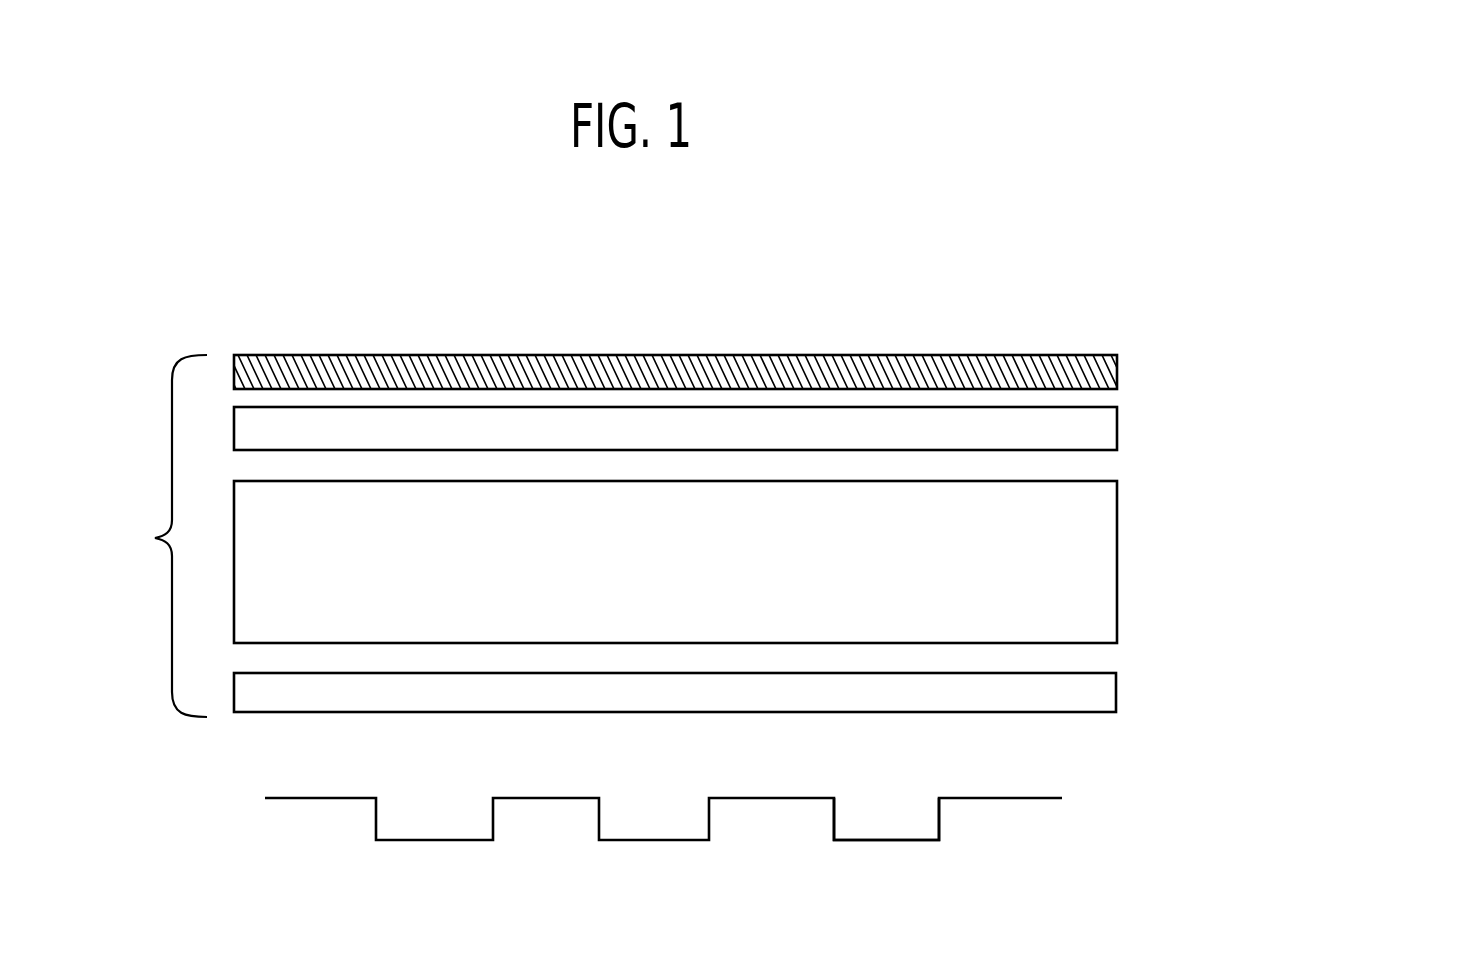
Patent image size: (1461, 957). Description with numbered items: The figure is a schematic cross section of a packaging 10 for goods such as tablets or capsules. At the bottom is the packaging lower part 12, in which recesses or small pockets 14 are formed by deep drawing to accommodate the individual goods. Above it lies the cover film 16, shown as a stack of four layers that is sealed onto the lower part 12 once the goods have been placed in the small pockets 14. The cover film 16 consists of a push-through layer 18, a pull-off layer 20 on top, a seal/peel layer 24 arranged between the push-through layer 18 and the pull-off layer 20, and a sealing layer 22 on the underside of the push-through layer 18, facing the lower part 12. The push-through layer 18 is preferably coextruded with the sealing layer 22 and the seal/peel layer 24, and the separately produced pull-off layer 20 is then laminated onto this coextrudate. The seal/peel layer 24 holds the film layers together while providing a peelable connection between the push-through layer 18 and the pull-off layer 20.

The packaging 10 is at (1290, 476).
The packaging lower part 12 is at (1045, 798).
The small pockets 14 is at (888, 840).
The cover film 16 is at (164, 538).
The push-through layer 18 is at (1103, 575).
The pull-off layer 20 is at (1117, 365).
The sealing layer 22 is at (1105, 687).
The seal/peel layer 24 is at (1112, 427).